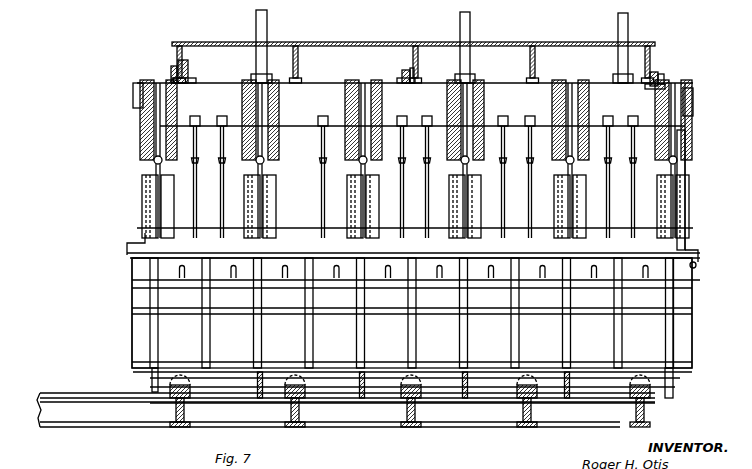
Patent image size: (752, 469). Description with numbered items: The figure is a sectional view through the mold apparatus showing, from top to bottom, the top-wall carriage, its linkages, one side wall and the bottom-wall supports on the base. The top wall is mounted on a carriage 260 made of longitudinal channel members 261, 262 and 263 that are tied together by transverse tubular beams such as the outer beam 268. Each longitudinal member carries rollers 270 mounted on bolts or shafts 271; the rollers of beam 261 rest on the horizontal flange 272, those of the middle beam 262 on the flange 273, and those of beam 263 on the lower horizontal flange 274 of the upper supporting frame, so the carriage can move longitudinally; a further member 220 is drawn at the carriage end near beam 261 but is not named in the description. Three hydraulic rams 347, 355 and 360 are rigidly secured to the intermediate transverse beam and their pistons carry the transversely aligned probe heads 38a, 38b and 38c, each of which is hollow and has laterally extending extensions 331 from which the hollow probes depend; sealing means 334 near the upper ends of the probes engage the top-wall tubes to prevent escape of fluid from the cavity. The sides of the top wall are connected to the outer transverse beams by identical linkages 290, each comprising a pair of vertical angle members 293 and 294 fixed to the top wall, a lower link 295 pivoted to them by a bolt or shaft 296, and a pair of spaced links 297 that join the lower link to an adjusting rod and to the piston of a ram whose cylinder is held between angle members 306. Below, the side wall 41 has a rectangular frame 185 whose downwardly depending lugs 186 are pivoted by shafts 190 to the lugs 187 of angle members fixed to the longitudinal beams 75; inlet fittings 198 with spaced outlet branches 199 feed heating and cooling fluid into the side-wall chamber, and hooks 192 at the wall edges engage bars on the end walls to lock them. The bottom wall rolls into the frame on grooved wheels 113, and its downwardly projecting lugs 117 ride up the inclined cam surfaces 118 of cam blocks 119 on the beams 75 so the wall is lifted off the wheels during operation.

The hydraulic ram 347 is at (268, 26).
The hydraulic ram 355 is at (471, 25).
The hydraulic ram 360 is at (629, 24).
The flange 273 is at (412, 86).
The transverse tubular beam 268 is at (495, 95).
The carriage 260 is at (135, 84).
The lower horizontal flange 274 is at (676, 98).
The longitudinal channel member 261 is at (172, 68).
The bracket 220 is at (188, 63).
The horizontal flange 272 is at (195, 79).
The longitudinal channel member 262 is at (402, 72).
The bolt or shaft 271 is at (397, 80).
The roller 270 is at (413, 70).
The longitudinal channel member 263 is at (664, 76).
The angle member 306 is at (170, 98).
The probe head 38a is at (213, 120).
The extension 331 is at (322, 117).
The probe head 38b is at (531, 117).
The probe head 38c is at (598, 118).
The linkage 290 is at (146, 179).
The spaced link 297 is at (158, 140).
The lower link 295 is at (154, 167).
The bolt or shaft 296 is at (160, 202).
The vertical angle member 294 is at (162, 210).
The vertical angle member 293 is at (153, 220).
The sealing means 334 is at (640, 165).
The hook 192 is at (130, 262).
The inlet conduit or fitting 198 is at (450, 283).
The outlet branch 199 is at (491, 280).
The rectangular frame 185 is at (692, 327).
The side wall 41 is at (130, 342).
The lug 186 is at (570, 378).
The shaft 190 is at (360, 385).
The lug 117 is at (212, 386).
The longitudinal beam 75 is at (182, 414).
The cam block 119 is at (190, 392).
The cam surface 118 is at (175, 388).
The wheel 113 is at (183, 380).
The lug 187 is at (590, 399).